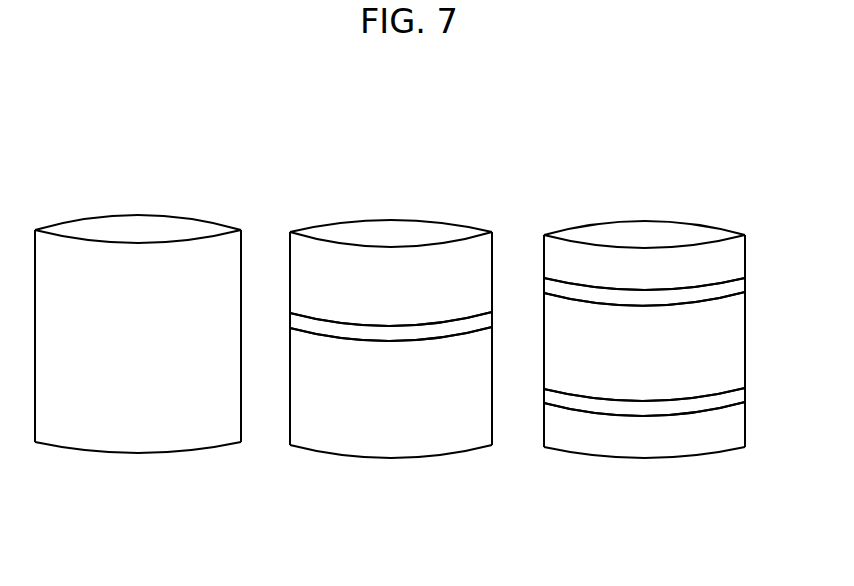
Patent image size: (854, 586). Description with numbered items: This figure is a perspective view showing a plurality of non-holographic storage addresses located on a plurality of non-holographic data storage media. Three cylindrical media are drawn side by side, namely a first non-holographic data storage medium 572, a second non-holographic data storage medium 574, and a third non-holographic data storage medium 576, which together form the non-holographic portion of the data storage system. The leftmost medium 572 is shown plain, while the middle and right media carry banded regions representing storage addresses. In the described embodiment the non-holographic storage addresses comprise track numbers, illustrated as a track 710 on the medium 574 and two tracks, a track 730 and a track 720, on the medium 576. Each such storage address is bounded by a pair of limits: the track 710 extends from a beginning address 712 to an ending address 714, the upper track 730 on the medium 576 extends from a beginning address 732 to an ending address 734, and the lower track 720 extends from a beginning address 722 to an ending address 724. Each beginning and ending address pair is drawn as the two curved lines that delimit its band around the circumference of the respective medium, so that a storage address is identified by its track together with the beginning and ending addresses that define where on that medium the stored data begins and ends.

The non-holographic data storage medium 572 is at (148, 446).
The non-holographic data storage medium 574 is at (413, 445).
The non-holographic data storage medium 576 is at (668, 450).
The track 710 is at (426, 328).
The beginning address 712 is at (290, 324).
The ending address 714 is at (492, 324).
The track 720 is at (683, 405).
The beginning address 722 is at (544, 398).
The ending address 724 is at (745, 398).
The track 730 is at (683, 298).
The beginning address 732 is at (544, 288).
The ending address 734 is at (745, 286).